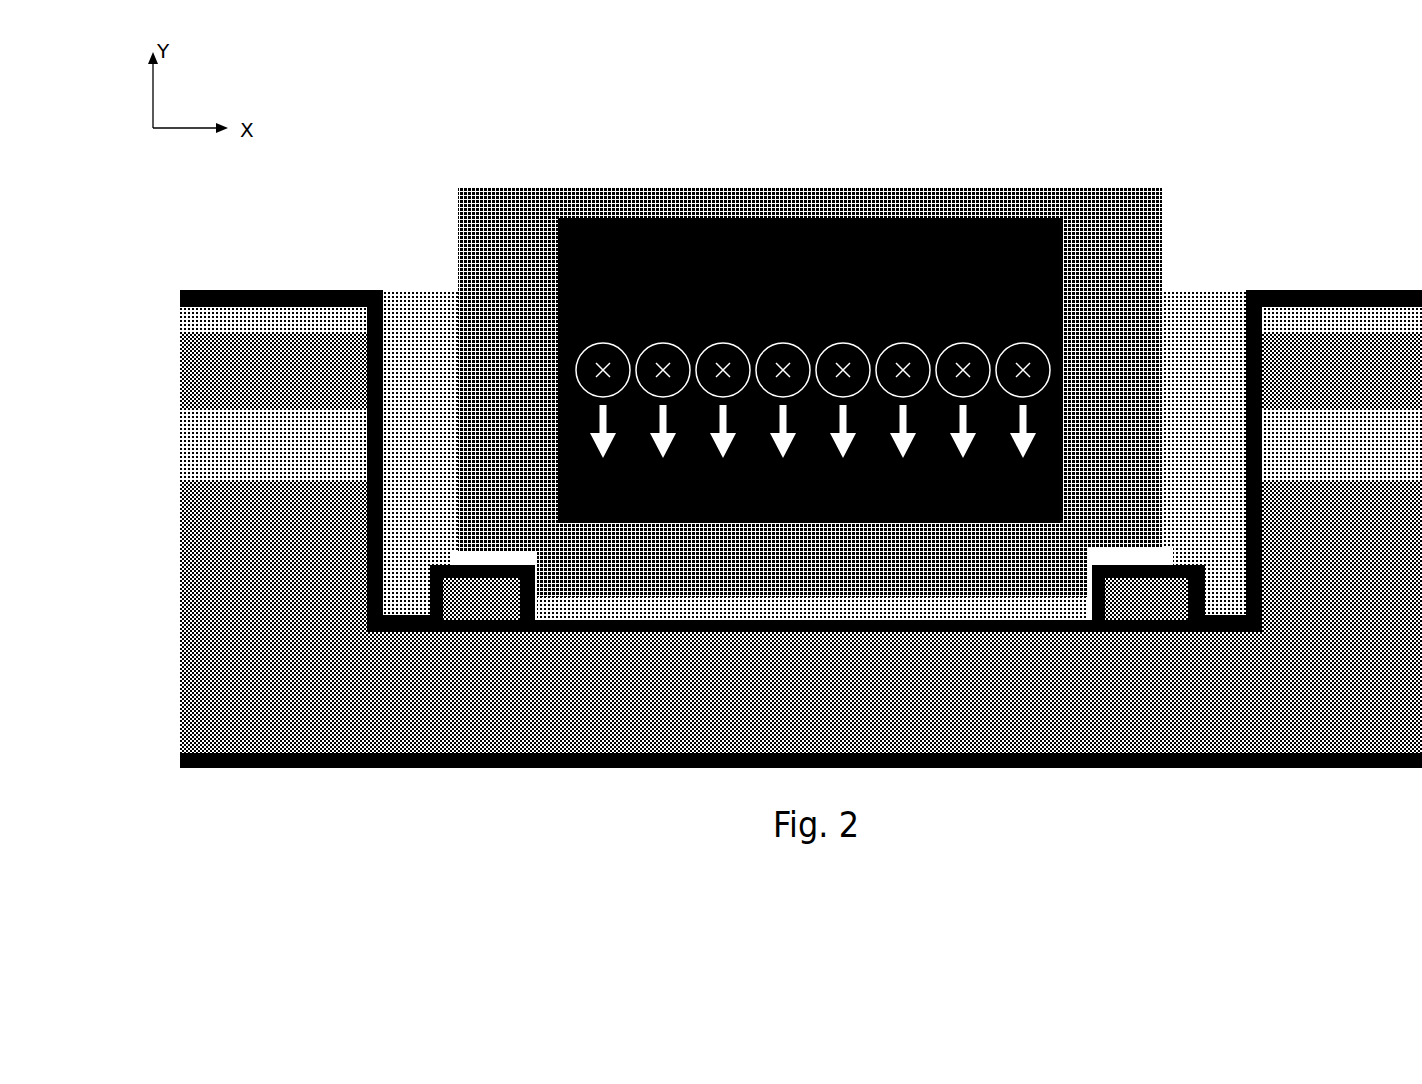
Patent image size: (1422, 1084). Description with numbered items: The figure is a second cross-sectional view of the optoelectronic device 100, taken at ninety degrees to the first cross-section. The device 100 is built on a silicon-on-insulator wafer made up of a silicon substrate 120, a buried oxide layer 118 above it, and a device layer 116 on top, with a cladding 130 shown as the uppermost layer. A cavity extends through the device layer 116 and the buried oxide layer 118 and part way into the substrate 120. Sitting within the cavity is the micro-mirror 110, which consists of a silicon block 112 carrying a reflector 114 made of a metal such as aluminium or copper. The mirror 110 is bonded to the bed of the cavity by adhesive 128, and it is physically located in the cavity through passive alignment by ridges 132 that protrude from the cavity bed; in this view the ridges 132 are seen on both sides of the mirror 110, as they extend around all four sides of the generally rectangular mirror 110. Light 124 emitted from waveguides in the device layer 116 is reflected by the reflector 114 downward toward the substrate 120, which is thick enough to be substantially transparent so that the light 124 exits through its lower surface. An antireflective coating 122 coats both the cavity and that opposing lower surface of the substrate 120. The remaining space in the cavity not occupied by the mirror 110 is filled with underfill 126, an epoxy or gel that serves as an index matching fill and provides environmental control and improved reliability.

The optoelectronic device 100 is at (236, 256).
The mirror 110 is at (443, 206).
The silicon block 112 is at (1107, 217).
The reflector 114 is at (558, 220).
The device layer 116 is at (207, 401).
The buried oxide layer 118 is at (232, 465).
The silicon substrate 120 is at (225, 655).
The antireflective coating 122 is at (292, 768).
The light 124 is at (723, 355).
The underfill 126 is at (403, 600).
The adhesive 128 is at (710, 605).
The cladding 130 is at (205, 320).
The ridge 132 is at (495, 605).